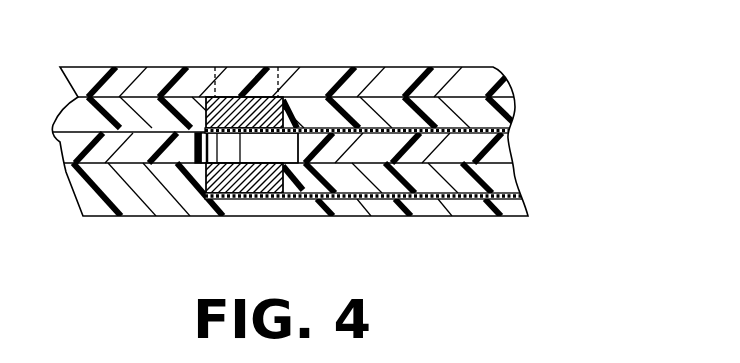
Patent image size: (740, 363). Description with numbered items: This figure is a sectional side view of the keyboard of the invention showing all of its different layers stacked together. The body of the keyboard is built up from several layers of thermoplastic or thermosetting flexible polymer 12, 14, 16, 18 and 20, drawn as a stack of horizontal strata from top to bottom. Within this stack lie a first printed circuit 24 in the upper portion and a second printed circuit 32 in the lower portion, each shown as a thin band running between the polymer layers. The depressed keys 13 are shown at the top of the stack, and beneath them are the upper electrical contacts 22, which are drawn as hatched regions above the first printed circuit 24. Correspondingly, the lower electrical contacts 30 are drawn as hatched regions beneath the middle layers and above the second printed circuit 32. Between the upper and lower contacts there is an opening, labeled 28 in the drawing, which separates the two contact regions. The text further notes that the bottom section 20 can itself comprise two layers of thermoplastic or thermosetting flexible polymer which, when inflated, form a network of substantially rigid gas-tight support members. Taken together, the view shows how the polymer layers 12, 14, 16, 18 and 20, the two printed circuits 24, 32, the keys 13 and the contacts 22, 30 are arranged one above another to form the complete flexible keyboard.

The thermoplastic or thermosetting flexible polymer layer 12 is at (500, 78).
The depressed keys 13 is at (248, 72).
The thermoplastic or thermosetting flexible polymer layer 14 is at (516, 107).
The thermoplastic or thermosetting flexible polymer layer 16 is at (513, 147).
The thermoplastic or thermosetting flexible polymer layer 18 is at (516, 172).
The thermoplastic or thermosetting flexible polymer section 20 is at (526, 210).
The upper electrical contacts 22 is at (207, 102).
The first printed circuit 24 is at (382, 130).
The through hole 28 is at (268, 148).
The lower electrical contacts 30 is at (213, 218).
The second printed circuit 32 is at (357, 203).